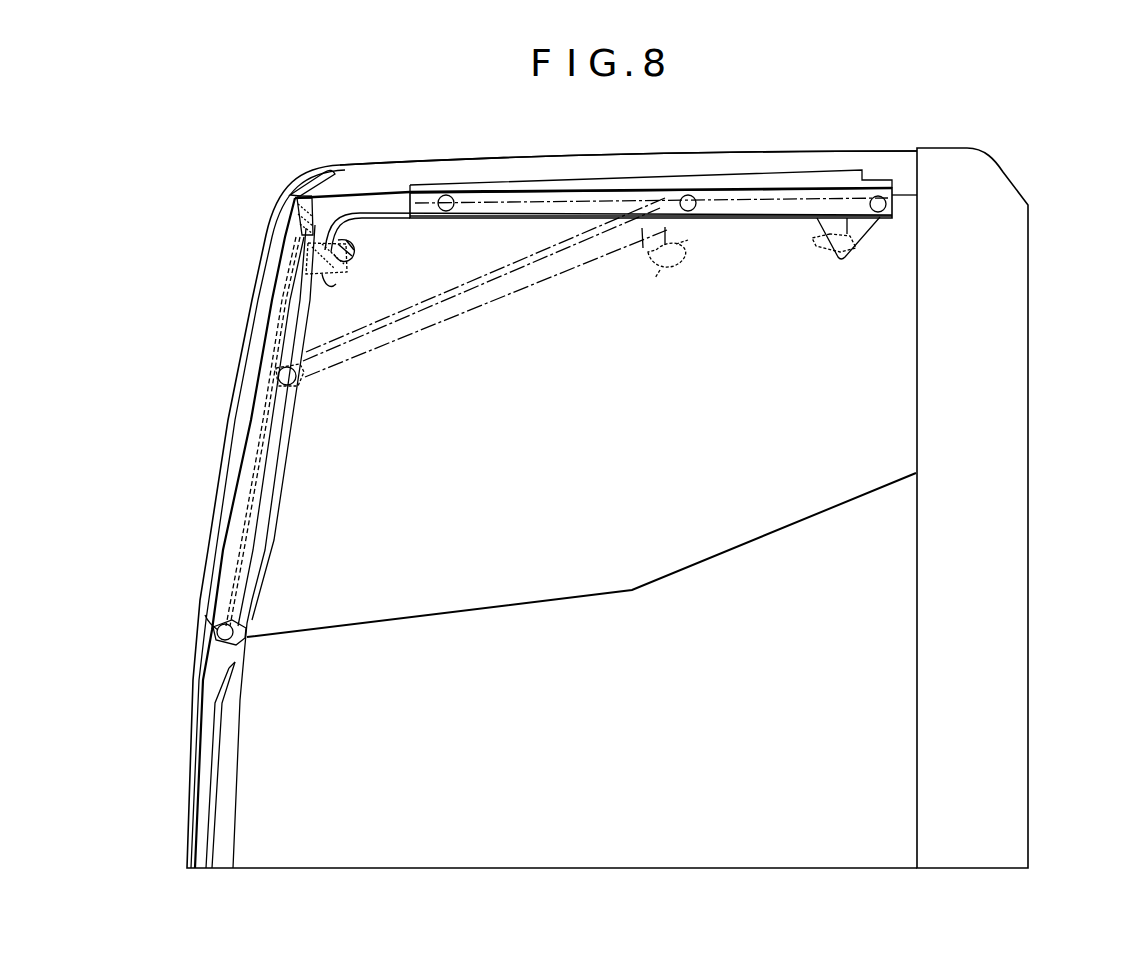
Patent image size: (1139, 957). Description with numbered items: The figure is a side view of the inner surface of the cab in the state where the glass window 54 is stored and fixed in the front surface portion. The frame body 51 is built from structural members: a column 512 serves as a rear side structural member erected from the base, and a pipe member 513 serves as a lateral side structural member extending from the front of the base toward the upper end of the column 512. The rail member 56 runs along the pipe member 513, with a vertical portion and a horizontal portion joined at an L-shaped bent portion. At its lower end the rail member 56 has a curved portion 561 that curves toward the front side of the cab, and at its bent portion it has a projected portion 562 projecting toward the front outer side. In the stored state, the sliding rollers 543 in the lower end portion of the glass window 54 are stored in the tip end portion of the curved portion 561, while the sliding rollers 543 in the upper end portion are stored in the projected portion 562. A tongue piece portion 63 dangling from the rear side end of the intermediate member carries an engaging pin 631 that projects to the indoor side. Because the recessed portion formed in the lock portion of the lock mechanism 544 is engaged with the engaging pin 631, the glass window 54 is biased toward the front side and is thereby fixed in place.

The frame body 51 is at (865, 140).
The column 512 is at (1004, 492).
The pipe member 513 is at (370, 162).
The glass window 54 is at (488, 295).
The sliding roller 543 is at (298, 196).
The lock mechanism 544 is at (334, 278).
The rail member 56 is at (428, 192).
The curved portion 561 is at (202, 613).
The projected portion 562 is at (282, 208).
The tongue piece portion 63 is at (355, 224).
The engaging pin 631 is at (350, 254).